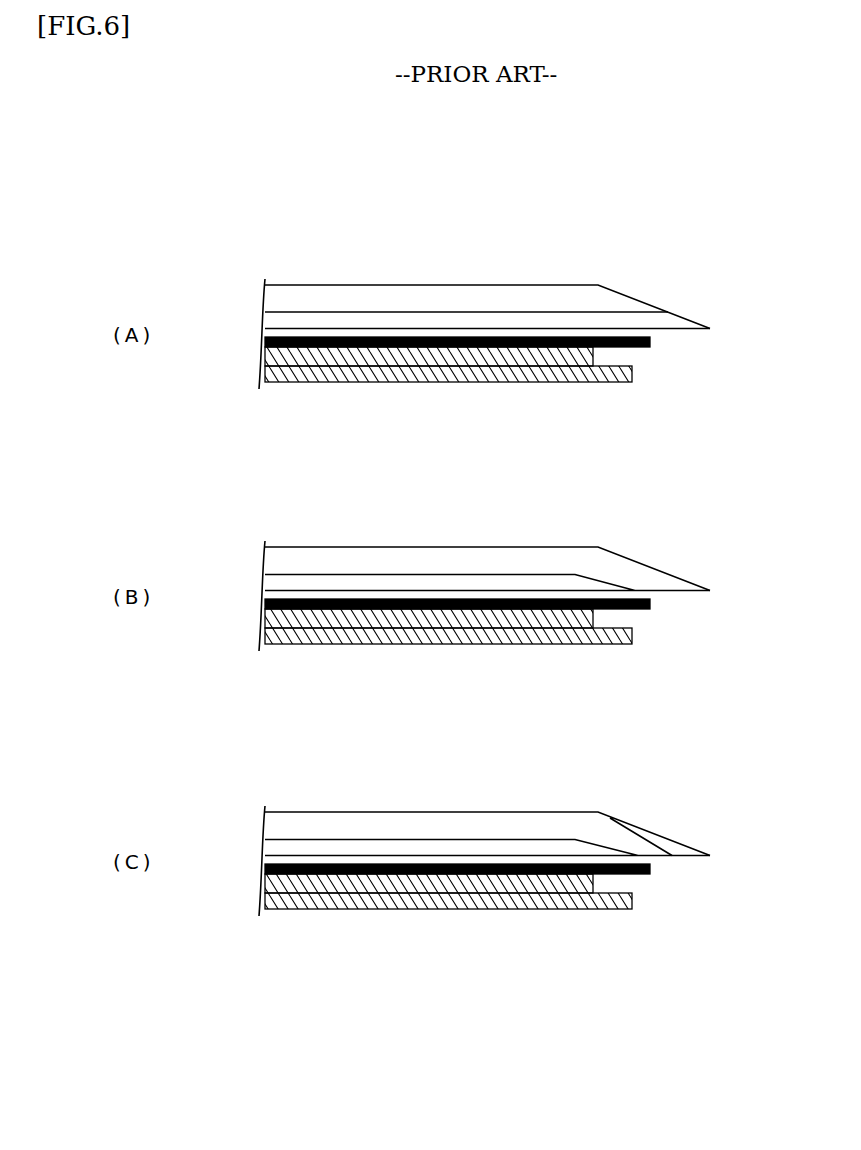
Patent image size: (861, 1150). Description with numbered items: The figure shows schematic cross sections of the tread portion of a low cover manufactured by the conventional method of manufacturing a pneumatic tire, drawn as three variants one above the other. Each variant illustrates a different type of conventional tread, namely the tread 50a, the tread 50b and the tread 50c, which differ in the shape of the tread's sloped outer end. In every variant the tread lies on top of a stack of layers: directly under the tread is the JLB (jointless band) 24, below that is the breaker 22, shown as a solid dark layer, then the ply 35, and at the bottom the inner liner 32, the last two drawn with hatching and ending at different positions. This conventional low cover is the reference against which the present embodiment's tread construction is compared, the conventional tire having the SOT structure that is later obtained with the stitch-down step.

The tread 50a is at (458, 285).
The tread 50b is at (458, 547).
The tread 50c is at (458, 812).
The JLB (jointless band) 24 is at (272, 322).
The breaker 22 is at (651, 341).
The ply 35 is at (594, 357).
The inner liner 32 is at (611, 370).